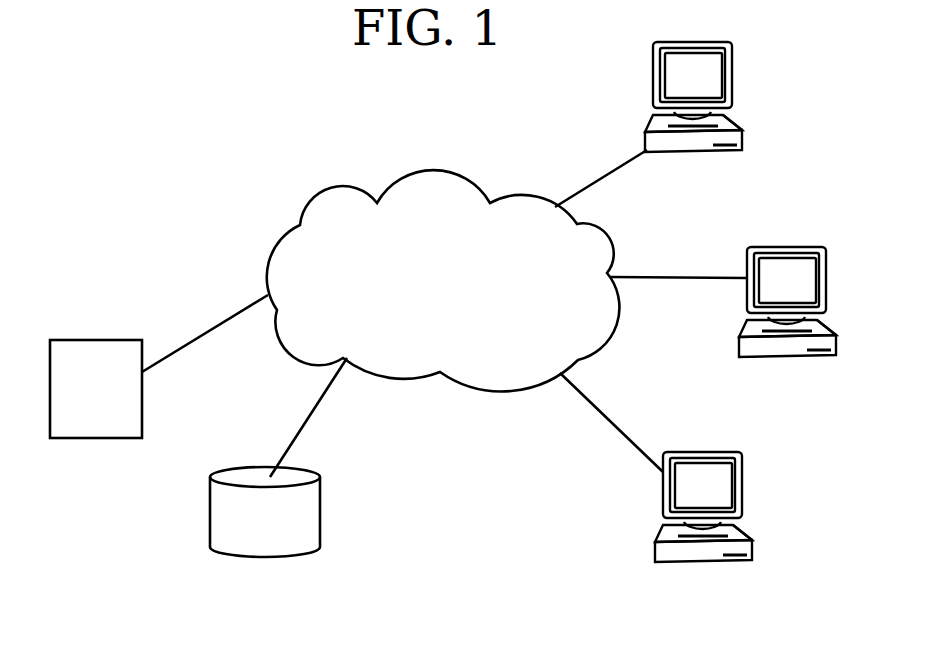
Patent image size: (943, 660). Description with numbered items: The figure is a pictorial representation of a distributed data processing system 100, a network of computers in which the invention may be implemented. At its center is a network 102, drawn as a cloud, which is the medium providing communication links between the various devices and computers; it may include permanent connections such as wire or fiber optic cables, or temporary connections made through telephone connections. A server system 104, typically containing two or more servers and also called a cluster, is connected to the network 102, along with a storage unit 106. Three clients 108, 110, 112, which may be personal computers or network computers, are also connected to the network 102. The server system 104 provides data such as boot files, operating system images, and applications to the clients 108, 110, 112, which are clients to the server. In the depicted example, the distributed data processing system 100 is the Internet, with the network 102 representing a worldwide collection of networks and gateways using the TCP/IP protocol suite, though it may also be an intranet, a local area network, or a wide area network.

The distributed data processing system 100 is at (265, 401).
The network 102 is at (421, 331).
The server system 104 is at (74, 427).
The storage unit 106 is at (242, 542).
The client 108 is at (696, 41).
The client 110 is at (795, 246).
The client 112 is at (709, 451).